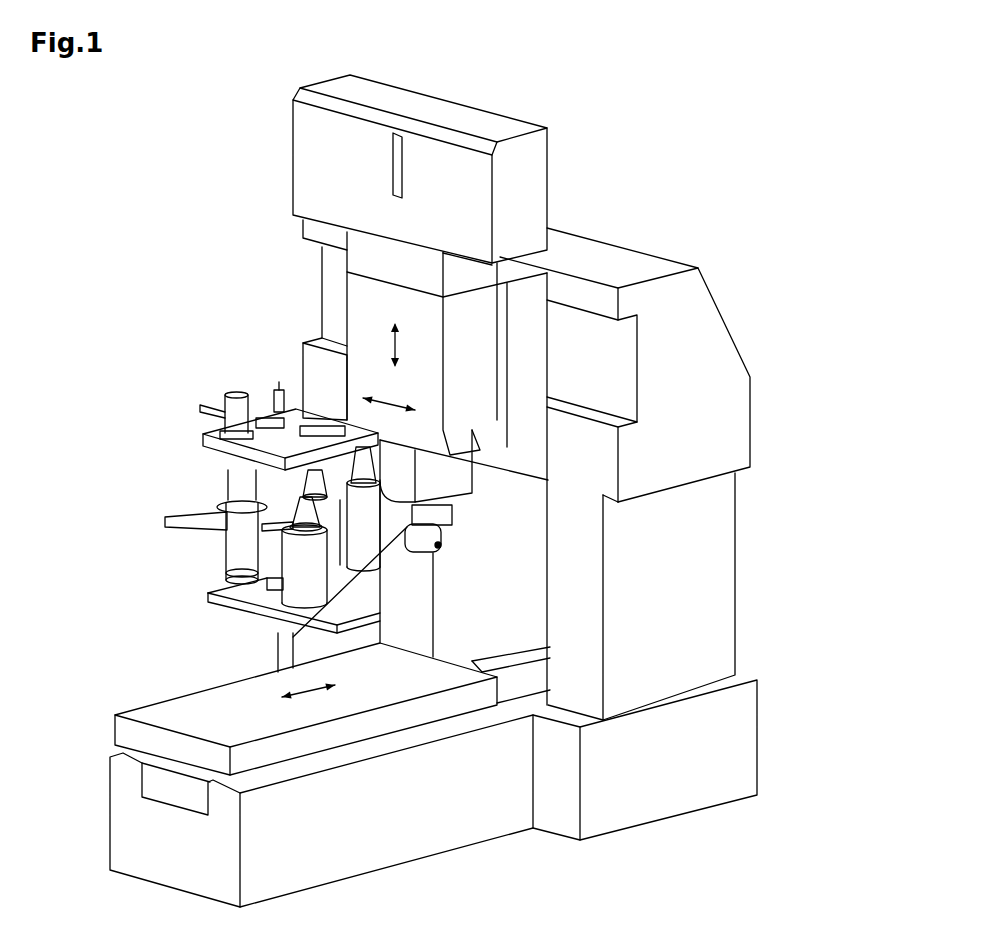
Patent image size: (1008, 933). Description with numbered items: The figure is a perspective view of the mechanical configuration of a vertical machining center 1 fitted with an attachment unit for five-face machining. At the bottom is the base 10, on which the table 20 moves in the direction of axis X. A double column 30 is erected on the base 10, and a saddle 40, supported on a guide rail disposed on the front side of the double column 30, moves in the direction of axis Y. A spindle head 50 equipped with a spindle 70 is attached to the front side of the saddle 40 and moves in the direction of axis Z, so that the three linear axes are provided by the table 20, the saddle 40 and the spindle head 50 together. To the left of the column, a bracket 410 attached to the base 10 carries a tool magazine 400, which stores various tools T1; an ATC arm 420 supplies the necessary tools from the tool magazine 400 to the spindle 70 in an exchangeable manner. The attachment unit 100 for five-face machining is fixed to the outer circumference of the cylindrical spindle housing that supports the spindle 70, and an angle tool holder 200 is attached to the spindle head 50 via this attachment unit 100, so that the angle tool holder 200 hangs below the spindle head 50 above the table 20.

The vertical machining center 1 is at (835, 457).
The base 10 is at (422, 835).
The table 20 is at (208, 710).
The double column 30 is at (715, 663).
The saddle 40 is at (533, 367).
The spindle head 50 is at (432, 325).
The spindle 70 is at (282, 639).
The attachment unit for five-face machining 100 is at (455, 486).
The angle tool holder 200 is at (458, 537).
The tool magazine 400 is at (262, 397).
The bracket 410 is at (218, 597).
The ATC arm 420 is at (187, 513).
The tool T1 is at (290, 547).